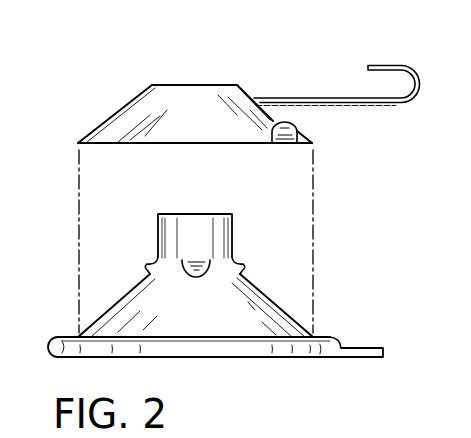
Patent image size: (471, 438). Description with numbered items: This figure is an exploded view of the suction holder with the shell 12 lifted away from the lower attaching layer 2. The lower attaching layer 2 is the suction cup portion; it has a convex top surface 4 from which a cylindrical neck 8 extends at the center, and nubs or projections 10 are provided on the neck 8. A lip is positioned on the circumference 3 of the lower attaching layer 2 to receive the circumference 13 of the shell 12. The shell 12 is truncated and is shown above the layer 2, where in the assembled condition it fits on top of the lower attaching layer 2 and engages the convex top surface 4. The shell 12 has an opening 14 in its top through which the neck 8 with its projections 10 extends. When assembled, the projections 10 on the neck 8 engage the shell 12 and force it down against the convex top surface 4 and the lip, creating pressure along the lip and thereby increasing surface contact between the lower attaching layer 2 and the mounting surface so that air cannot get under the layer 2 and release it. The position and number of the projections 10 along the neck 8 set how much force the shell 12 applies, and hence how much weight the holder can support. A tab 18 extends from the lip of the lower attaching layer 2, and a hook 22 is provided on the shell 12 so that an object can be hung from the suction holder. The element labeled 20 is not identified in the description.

The lower attaching layer 2 is at (248, 282).
The circumference 3 is at (331, 338).
The convex top surface 4 is at (261, 291).
The cylindrical neck 8 is at (234, 241).
The nubs or projections 10 is at (150, 262).
The shell 12 is at (231, 77).
The circumference 13 is at (115, 115).
The opening 14 is at (203, 85).
The tab 18 is at (369, 348).
The detent bump 20 is at (298, 133).
The hook 22 is at (382, 65).